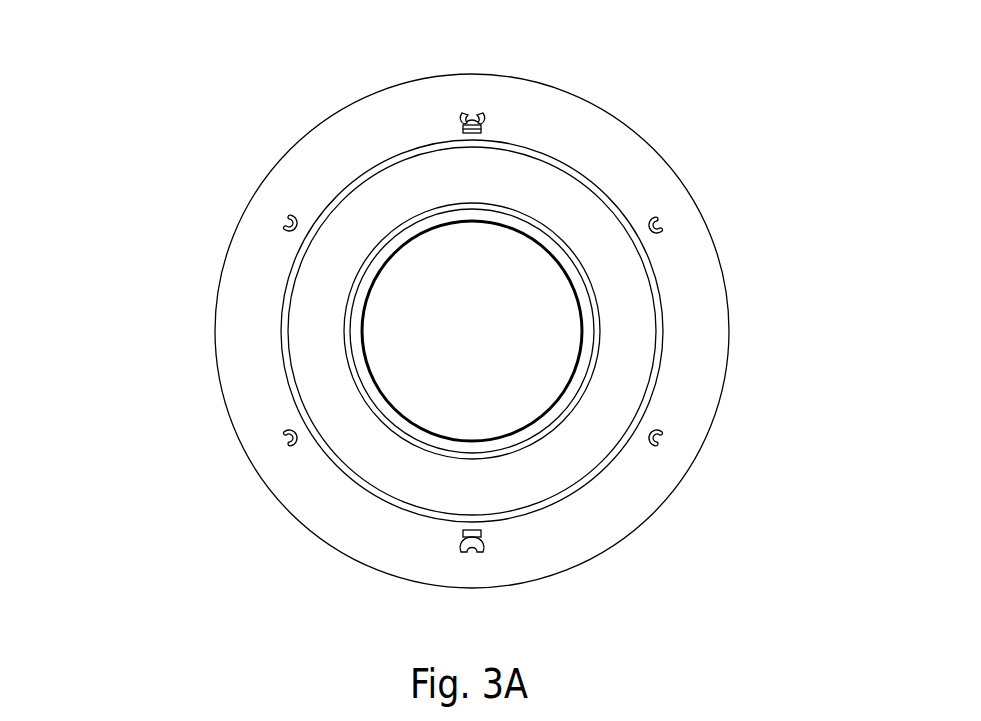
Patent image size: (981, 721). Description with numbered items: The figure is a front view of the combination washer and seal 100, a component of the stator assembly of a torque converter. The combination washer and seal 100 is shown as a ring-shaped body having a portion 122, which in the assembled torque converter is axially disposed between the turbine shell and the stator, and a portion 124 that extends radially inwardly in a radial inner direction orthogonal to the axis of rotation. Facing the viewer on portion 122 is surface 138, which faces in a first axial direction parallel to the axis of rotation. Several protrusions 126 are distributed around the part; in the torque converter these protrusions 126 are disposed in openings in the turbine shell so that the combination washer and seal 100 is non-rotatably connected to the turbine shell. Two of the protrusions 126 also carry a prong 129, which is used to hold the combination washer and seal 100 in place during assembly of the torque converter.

The combination washer and seal 100 is at (668, 88).
The portion 122 is at (220, 278).
The portion 124 is at (220, 403).
The protrusions 126 is at (468, 112).
The prong 129 is at (458, 127).
The surface 138 is at (695, 315).